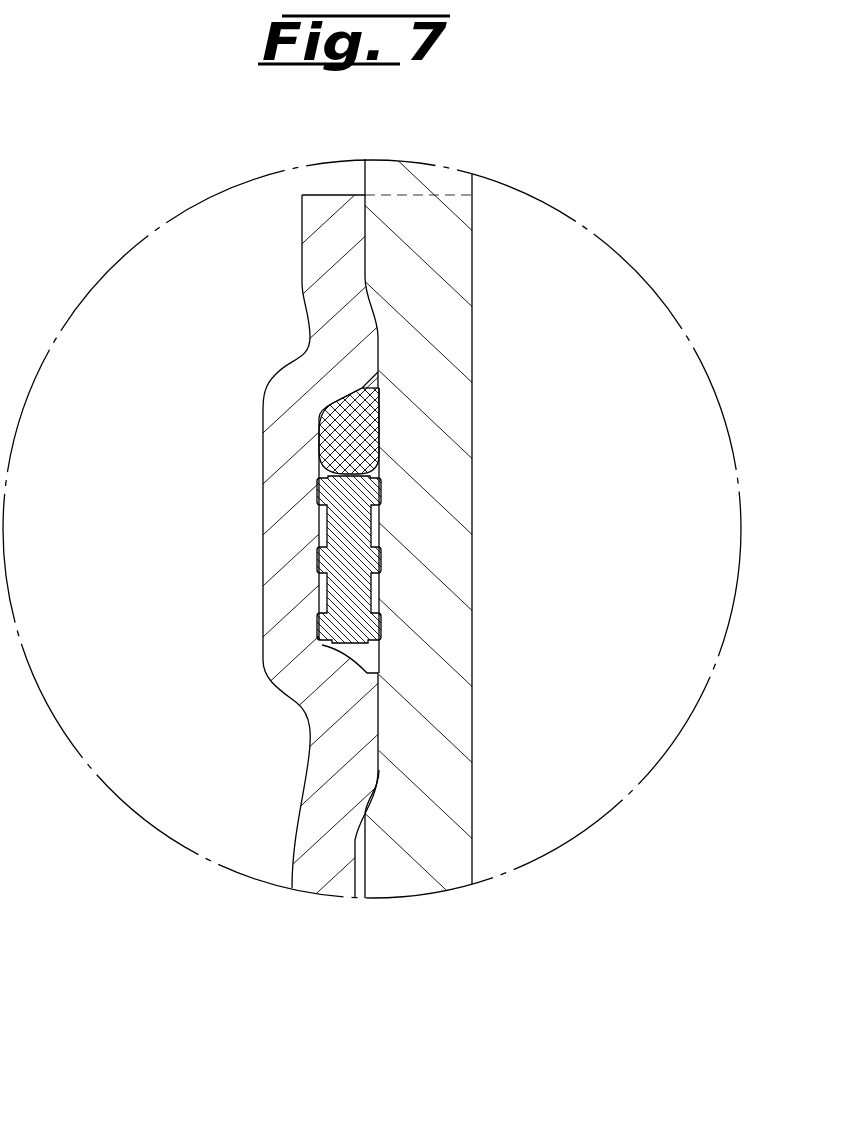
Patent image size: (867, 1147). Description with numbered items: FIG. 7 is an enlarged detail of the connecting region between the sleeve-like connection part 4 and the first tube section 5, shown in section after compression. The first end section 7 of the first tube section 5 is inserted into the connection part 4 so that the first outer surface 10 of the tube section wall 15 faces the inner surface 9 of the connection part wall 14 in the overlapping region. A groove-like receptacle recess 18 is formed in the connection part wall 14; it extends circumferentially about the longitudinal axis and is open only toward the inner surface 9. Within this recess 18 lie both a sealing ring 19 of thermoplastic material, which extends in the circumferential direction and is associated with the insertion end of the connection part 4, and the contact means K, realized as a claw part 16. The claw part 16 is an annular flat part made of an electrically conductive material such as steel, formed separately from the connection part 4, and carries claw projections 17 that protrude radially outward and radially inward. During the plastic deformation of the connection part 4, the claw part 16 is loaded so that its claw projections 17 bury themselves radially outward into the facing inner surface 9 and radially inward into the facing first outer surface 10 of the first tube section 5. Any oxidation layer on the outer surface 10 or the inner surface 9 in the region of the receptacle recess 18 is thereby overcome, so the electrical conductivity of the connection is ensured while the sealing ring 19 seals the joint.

The connection part 4 is at (270, 503).
The first tube section 5 is at (492, 388).
The first end section 7 is at (443, 830).
The inner surface 9 is at (353, 880).
The first outer surface 10 is at (367, 867).
The connection part wall 14 is at (337, 292).
The tube section wall 15 is at (445, 258).
The claw part 16 is at (348, 528).
The claw projections 17 is at (316, 489).
The receptacle recess 18 is at (318, 529).
The sealing ring 19 is at (345, 422).
The contact means K is at (343, 590).